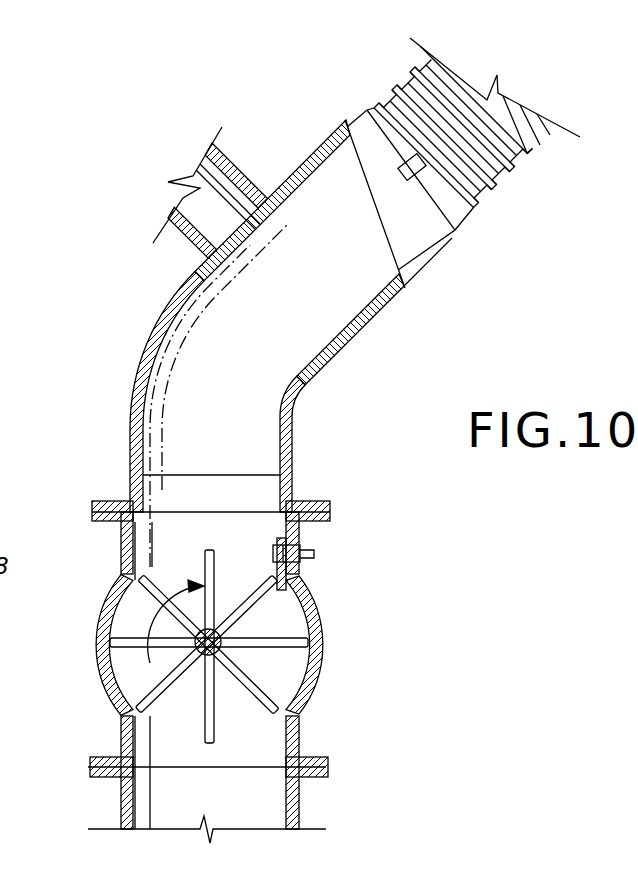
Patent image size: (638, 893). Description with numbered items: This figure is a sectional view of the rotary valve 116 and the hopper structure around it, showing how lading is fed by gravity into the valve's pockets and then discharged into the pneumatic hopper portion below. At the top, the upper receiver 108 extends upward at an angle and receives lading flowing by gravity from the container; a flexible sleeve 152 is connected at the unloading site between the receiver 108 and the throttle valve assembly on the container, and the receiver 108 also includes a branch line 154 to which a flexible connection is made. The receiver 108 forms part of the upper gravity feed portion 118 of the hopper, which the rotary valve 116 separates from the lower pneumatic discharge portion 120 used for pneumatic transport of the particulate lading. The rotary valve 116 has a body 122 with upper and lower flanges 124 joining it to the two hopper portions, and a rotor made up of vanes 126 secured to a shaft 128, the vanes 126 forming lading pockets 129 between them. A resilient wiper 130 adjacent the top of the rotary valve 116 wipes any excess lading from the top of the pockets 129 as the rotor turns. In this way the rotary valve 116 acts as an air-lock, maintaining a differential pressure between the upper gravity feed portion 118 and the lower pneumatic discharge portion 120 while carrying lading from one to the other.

The upper receiver 108 is at (165, 290).
The rotary valve 116 is at (88, 656).
The upper gravity feed portion 118 is at (130, 417).
The lower pneumatic discharge portion 120 is at (300, 812).
The body 122 is at (323, 652).
The upper and lower flanges 124 is at (337, 534).
The vanes 126 is at (162, 690).
The shaft 128 is at (223, 635).
The lading pockets 129 is at (170, 577).
The resilient wiper 130 is at (300, 568).
The flexible sleeve 152 is at (512, 168).
The branch line 154 is at (233, 163).